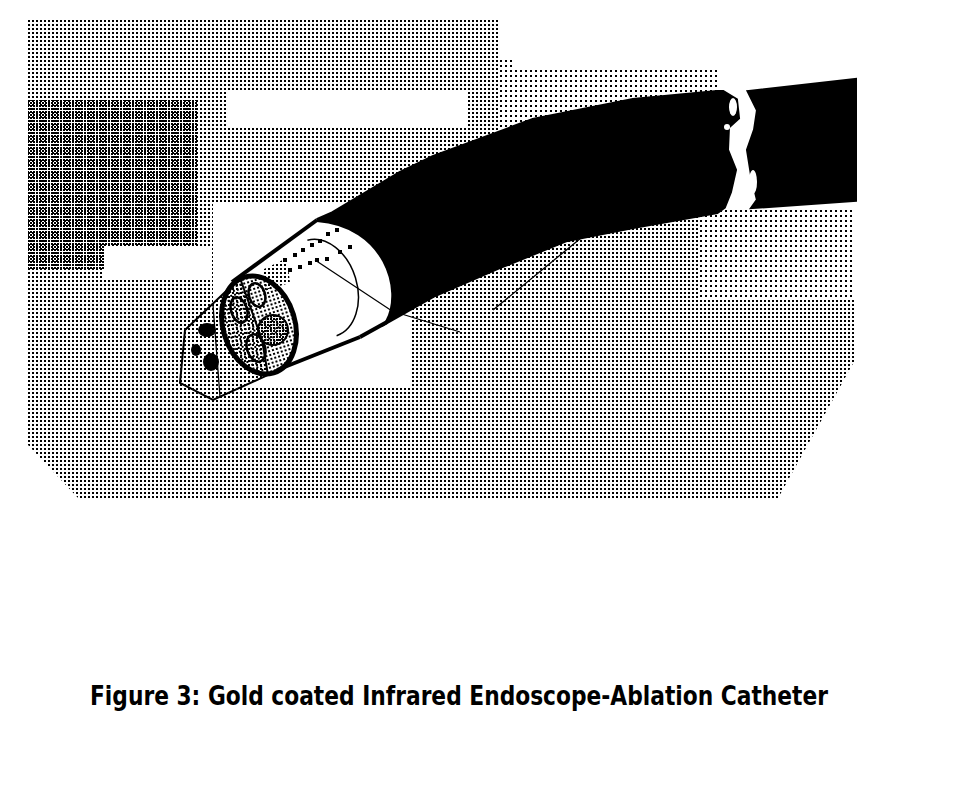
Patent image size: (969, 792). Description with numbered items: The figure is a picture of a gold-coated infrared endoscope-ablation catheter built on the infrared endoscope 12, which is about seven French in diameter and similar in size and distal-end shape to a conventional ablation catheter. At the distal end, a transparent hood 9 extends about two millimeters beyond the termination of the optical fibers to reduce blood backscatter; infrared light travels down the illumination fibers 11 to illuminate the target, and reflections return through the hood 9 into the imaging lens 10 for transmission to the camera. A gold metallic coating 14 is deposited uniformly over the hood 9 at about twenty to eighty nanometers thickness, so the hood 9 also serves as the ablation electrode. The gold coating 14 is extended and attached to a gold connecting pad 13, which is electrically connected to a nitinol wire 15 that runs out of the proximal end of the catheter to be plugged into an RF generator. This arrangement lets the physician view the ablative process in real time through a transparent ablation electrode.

The hood 9 is at (193, 330).
The imaging lens 10 is at (297, 408).
The illumination fibers 11 is at (387, 351).
The infrared endoscope 12 is at (610, 150).
The gold connecting pad 13 is at (282, 262).
The metallic coating 14 is at (200, 377).
The nitinol wire 15 is at (514, 239).